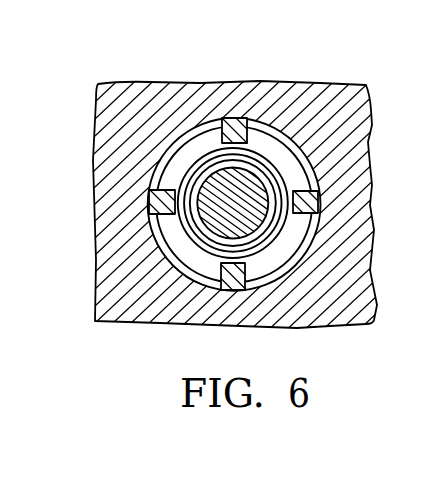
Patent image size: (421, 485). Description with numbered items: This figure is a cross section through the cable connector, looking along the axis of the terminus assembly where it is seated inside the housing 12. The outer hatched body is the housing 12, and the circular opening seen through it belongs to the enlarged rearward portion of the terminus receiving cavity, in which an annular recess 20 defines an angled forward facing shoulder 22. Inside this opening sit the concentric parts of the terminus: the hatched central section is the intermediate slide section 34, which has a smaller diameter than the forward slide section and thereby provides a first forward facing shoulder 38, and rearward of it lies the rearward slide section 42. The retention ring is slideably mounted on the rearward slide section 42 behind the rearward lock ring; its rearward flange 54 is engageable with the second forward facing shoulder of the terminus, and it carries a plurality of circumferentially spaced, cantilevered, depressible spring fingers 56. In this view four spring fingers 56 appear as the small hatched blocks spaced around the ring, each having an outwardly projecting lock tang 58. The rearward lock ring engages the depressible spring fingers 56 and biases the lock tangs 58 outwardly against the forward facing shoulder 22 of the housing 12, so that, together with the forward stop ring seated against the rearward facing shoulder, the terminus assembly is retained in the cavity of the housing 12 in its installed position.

The housing 12 is at (142, 88).
The annular recess 20 is at (186, 268).
The forward facing shoulder 22 is at (314, 130).
The intermediate slide section 34 is at (267, 183).
The first forward facing shoulder 38 is at (268, 223).
The rearward slide section 42 is at (298, 236).
The rearward flange 54 is at (277, 257).
The spring fingers 56 is at (250, 118).
The lock tangs 58 is at (223, 128).